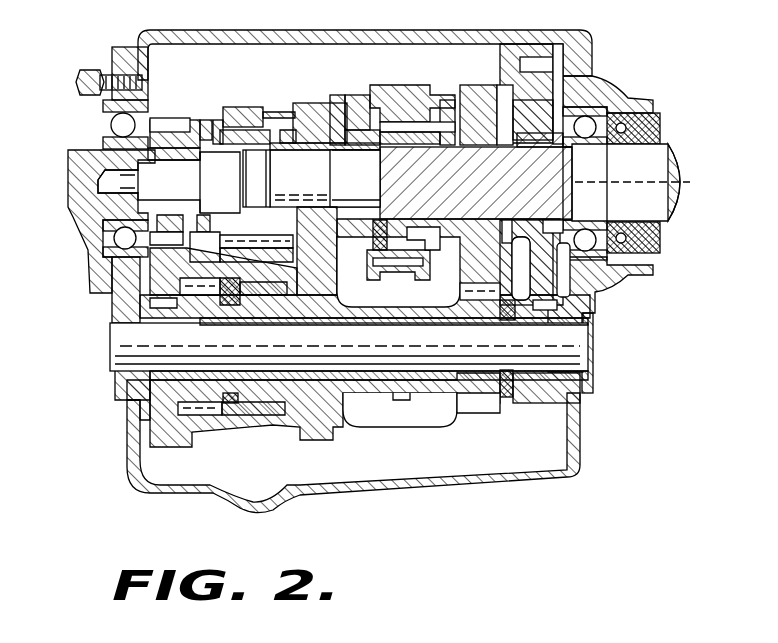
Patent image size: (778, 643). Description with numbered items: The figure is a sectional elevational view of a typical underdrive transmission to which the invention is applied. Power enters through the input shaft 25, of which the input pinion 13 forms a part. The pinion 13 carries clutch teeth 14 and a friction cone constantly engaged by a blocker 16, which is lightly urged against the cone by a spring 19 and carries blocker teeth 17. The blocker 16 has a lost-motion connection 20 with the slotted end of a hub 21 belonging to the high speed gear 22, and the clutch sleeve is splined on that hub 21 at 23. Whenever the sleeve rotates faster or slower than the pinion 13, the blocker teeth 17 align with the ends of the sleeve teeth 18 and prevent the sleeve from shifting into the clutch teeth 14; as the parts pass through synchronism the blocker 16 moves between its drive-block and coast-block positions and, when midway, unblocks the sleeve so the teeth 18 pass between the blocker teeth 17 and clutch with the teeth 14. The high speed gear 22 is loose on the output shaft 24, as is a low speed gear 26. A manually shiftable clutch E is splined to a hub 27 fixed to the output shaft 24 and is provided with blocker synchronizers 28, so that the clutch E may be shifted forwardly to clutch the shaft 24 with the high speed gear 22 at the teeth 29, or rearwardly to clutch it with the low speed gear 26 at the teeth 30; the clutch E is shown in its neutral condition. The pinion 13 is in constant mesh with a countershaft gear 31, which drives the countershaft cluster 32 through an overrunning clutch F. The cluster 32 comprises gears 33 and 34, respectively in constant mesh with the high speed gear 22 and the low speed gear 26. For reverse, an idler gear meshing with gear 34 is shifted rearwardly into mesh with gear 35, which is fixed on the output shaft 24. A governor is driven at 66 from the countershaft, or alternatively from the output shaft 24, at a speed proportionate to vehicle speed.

The input pinion 13 is at (155, 120).
The clutch teeth 14 is at (198, 125).
The blocker 16 is at (212, 160).
The blocker teeth 17 is at (220, 125).
The teeth of clutch sleeve 18 is at (258, 130).
The spring 19 is at (252, 165).
The lost-motion connection 20 is at (235, 130).
The hub 21 is at (296, 120).
The high speed gear 22 is at (332, 95).
The splines 23 is at (285, 150).
The output shaft 24 is at (672, 165).
The input shaft 25 is at (72, 177).
The low speed gear 26 is at (480, 76).
The hub 27 is at (420, 160).
The blocker synchronizers 28 is at (355, 150).
The teeth 29 is at (353, 102).
The teeth 30 is at (450, 95).
The countershaft gear 31 is at (125, 300).
The countershaft cluster 32 is at (345, 318).
The gear 33 is at (318, 440).
The gear 34 is at (482, 413).
The gear 35 is at (540, 60).
The governor drive 66 is at (400, 400).
The manually shiftable clutch E is at (400, 80).
The overrunning clutch F is at (185, 335).